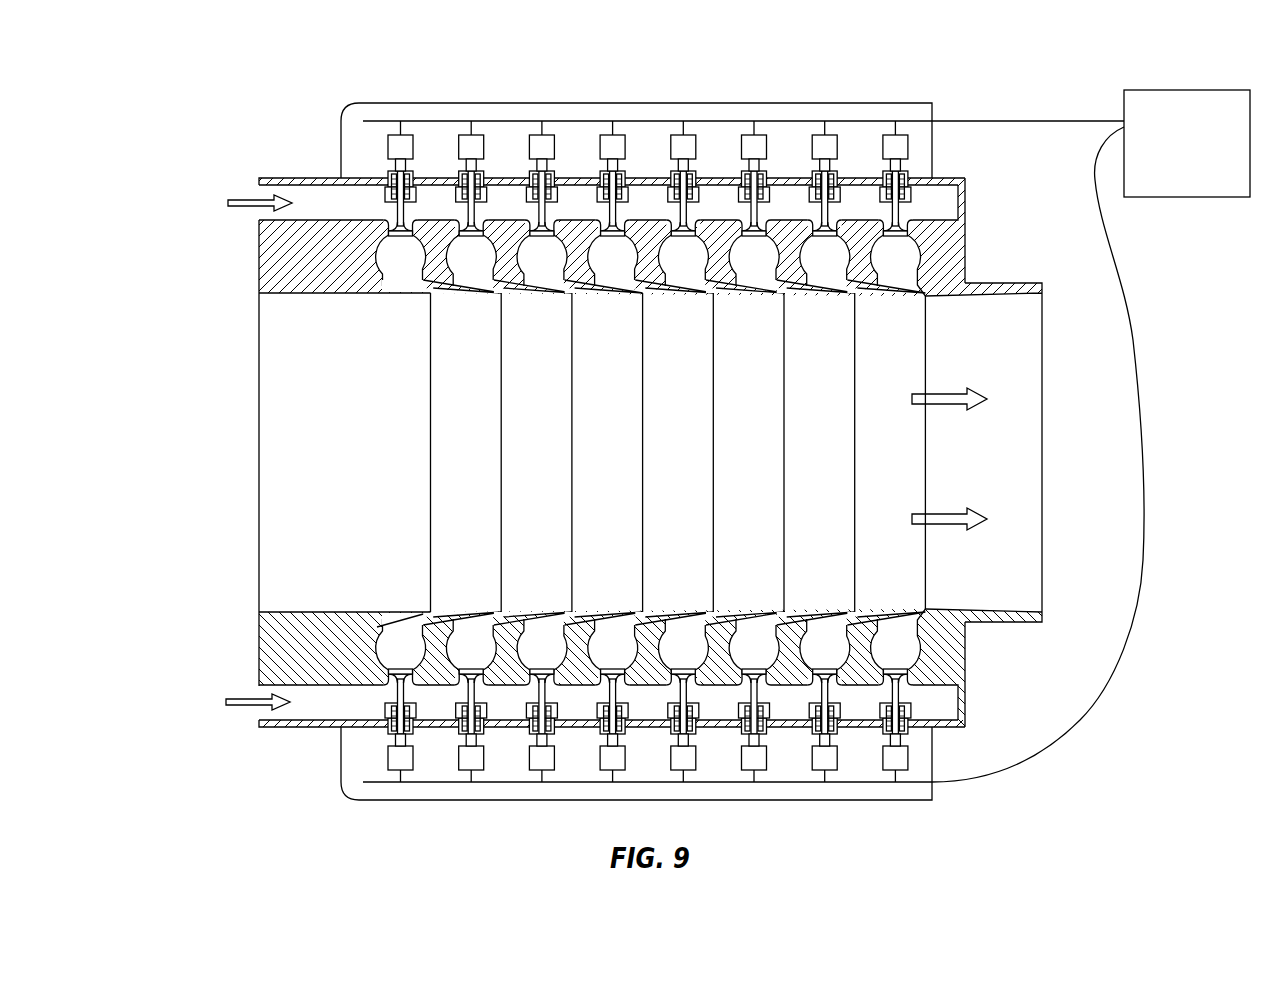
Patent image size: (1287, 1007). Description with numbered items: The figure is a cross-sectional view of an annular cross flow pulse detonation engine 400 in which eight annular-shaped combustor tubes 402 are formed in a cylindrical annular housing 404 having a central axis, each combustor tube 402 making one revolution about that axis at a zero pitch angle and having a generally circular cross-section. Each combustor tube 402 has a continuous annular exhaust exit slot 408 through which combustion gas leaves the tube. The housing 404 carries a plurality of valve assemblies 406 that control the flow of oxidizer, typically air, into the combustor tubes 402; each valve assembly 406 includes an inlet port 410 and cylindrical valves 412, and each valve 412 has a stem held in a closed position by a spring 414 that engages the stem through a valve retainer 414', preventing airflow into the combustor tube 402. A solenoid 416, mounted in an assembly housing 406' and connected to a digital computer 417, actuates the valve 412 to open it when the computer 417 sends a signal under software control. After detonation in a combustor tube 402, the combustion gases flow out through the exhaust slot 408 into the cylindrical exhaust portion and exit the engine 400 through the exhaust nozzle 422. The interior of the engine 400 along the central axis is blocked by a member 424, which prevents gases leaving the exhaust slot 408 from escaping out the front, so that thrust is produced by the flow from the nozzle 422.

The annular cross flow pulse detonation engine 400 is at (648, 56).
The annular-shaped combustor tube 402 is at (377, 280).
The cylindrical annular housing 404 is at (303, 728).
The valve assembly 406 is at (753, 412).
The assembly housing 406' is at (636, 443).
The annular exhaust exit slot 408 is at (440, 294).
The inlet port 410 is at (389, 233).
The cylindrical valve 412 is at (465, 221).
The spring 414 is at (494, 147).
The valve retainer 414' is at (494, 129).
The solenoid 416 is at (828, 146).
The digital computer 417 is at (1205, 180).
The exhaust nozzle 422 is at (1022, 363).
The blocking member 424 is at (259, 395).